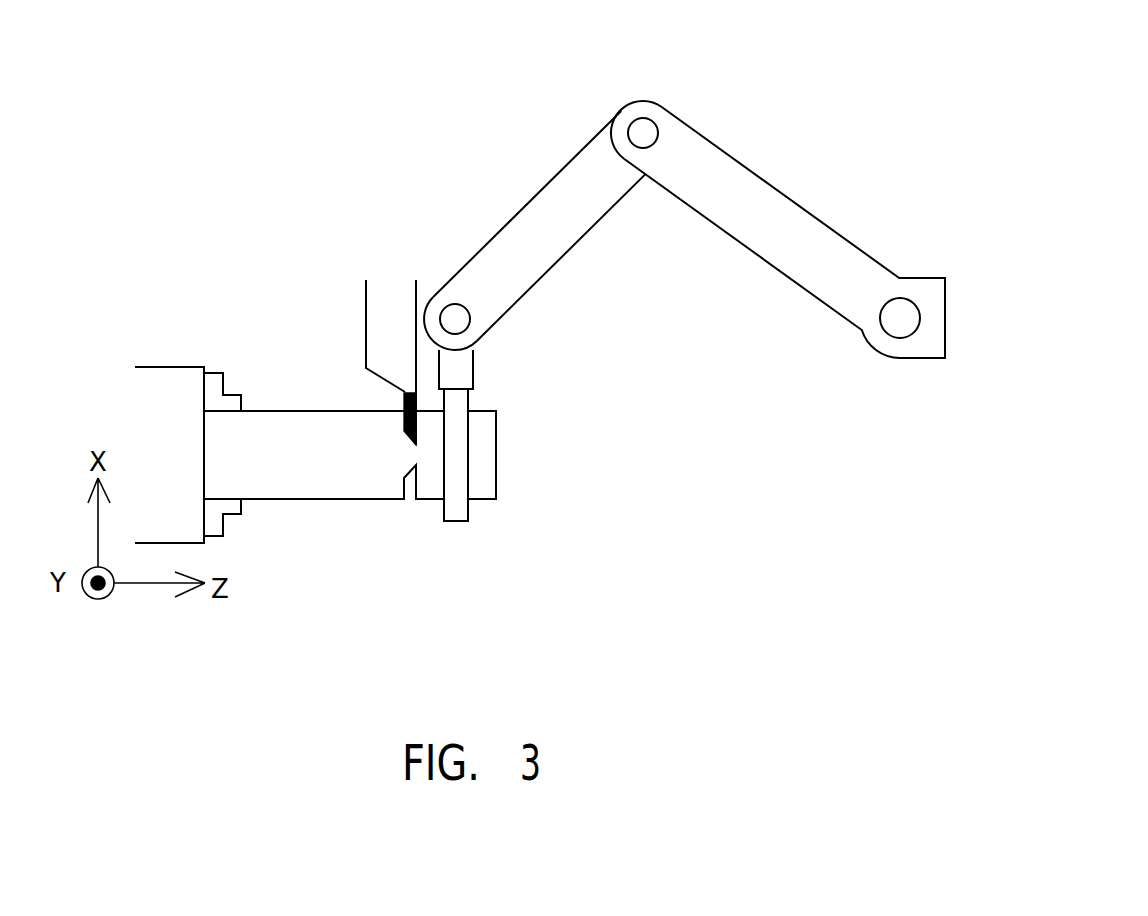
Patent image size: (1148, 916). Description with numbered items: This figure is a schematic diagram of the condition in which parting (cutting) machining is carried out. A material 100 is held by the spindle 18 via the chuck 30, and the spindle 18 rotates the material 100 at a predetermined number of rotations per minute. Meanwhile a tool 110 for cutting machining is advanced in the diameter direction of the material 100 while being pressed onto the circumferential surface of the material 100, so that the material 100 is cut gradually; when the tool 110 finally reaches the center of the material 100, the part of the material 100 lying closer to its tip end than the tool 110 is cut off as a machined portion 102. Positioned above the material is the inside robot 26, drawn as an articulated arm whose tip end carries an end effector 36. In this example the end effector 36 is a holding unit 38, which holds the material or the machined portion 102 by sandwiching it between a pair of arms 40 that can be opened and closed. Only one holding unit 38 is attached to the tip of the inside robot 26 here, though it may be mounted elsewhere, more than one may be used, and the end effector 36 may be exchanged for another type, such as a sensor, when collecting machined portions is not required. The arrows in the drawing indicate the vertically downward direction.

The spindle 18 is at (168, 372).
The chuck 30 is at (217, 382).
The material 100 is at (292, 490).
The machined portion 102 is at (489, 487).
The tool 110 is at (366, 342).
The arms 40 is at (458, 523).
The end effector 36 is at (478, 372).
The holding unit 38 is at (549, 370).
The inside robot 26 is at (742, 97).